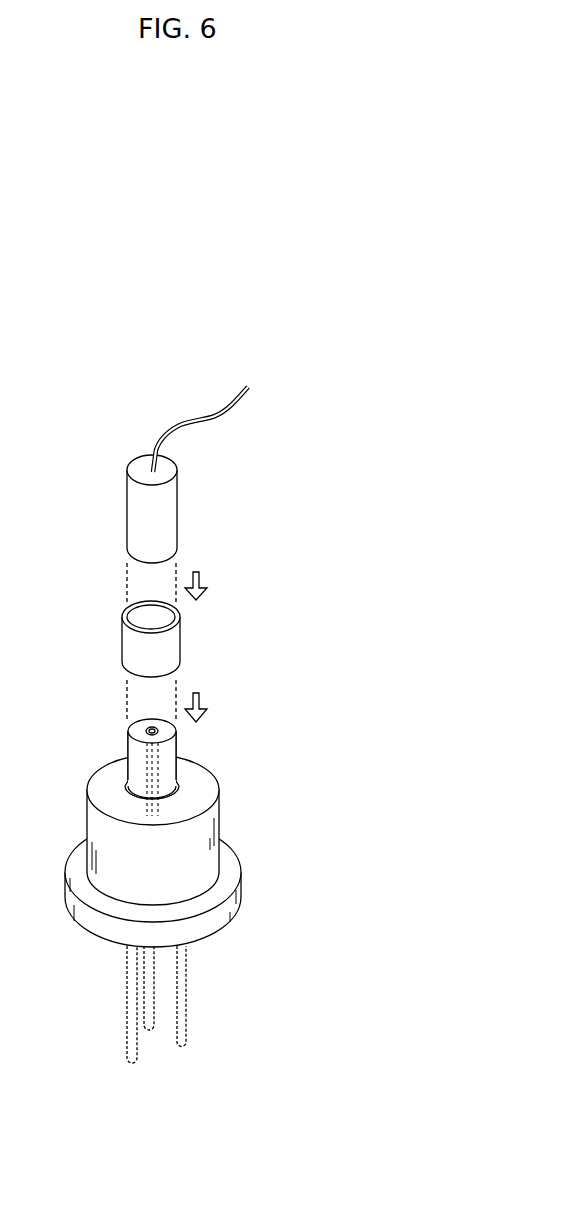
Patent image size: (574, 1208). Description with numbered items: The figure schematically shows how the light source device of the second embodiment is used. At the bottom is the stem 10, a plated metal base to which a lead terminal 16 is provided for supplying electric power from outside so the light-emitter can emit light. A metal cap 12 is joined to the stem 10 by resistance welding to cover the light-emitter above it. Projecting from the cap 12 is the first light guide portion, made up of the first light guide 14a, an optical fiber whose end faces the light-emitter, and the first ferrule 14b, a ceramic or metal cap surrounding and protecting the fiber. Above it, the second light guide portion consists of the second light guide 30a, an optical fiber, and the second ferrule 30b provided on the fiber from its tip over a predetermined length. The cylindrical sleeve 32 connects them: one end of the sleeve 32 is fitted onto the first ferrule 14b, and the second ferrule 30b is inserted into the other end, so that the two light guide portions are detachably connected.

The stem 10 is at (226, 910).
The cap 12 is at (112, 842).
The first light guide 14a is at (149, 728).
The first ferrule 14b is at (168, 771).
The lead terminal 16 is at (128, 1031).
The second light guide 30a is at (224, 416).
The second ferrule 30b is at (166, 516).
The sleeve 32 is at (167, 650).